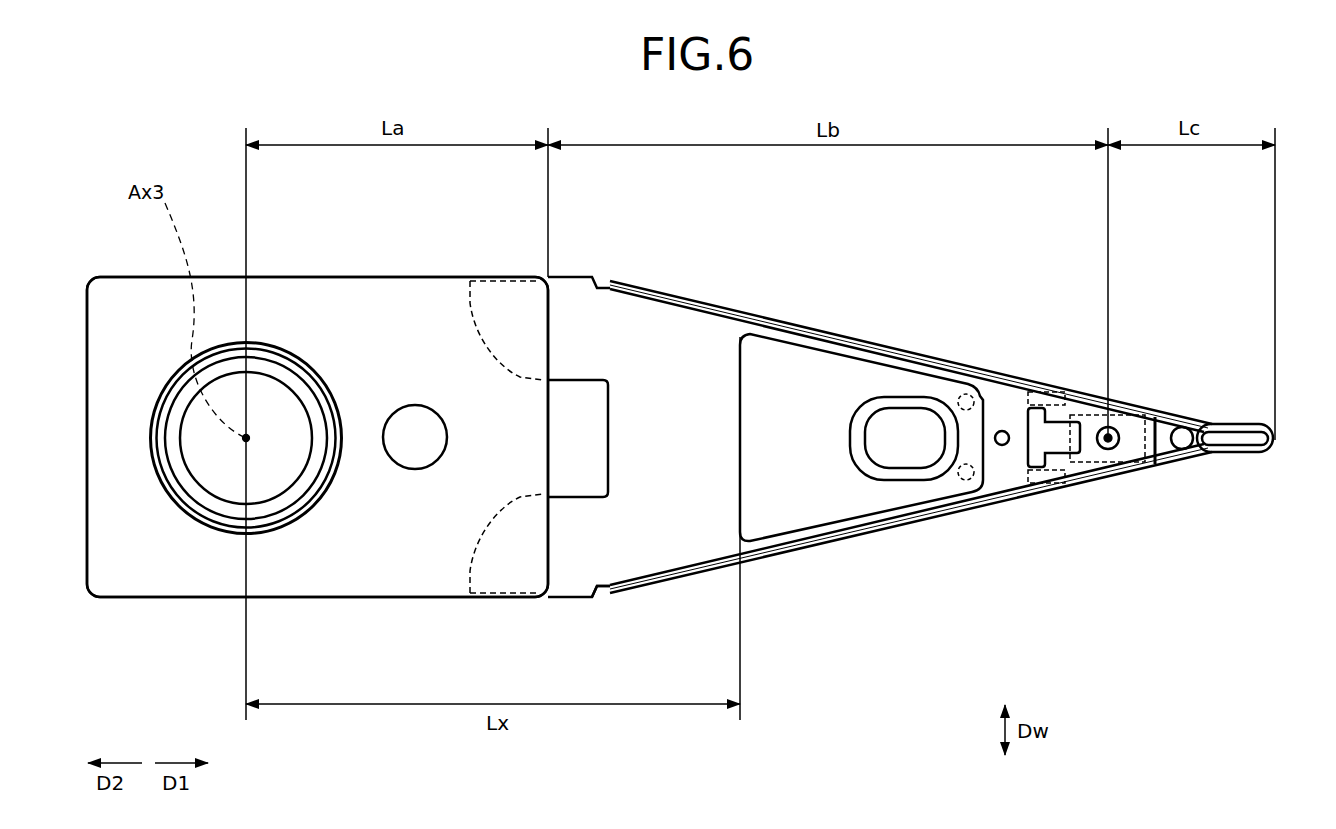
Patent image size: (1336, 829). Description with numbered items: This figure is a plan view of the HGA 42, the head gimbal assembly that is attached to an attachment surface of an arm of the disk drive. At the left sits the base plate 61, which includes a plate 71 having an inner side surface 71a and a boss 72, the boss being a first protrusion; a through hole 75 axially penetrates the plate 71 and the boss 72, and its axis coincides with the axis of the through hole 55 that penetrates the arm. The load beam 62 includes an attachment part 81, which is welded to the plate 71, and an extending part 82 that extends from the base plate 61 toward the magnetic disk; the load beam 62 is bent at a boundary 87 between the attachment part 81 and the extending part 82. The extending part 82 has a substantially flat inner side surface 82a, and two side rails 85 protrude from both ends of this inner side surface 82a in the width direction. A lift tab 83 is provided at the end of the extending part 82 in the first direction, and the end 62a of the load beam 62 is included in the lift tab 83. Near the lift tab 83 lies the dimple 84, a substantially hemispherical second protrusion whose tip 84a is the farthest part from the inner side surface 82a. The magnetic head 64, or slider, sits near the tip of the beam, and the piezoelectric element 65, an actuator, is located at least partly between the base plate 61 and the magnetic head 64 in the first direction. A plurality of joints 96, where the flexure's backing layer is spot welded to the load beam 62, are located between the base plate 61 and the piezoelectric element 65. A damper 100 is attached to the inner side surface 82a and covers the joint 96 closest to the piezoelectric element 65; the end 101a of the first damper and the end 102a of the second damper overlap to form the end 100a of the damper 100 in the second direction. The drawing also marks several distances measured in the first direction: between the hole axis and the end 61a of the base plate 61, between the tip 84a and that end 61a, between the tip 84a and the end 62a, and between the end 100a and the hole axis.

The HGA 42 is at (1174, 628).
The through hole 55 is at (260, 359).
The base plate 61 is at (135, 604).
The end of the base plate 61a is at (552, 330).
The load beam 62 is at (889, 334).
The end of the load beam 62a is at (1273, 447).
The magnetic head 64 is at (1145, 417).
The piezoelectric element 65 is at (1035, 392).
The plate 71 is at (317, 398).
The inner side surface 71a is at (393, 300).
The boss 72 is at (218, 505).
The through hole 75 is at (278, 400).
The attachment part 81 is at (510, 600).
The extending part 82 is at (911, 431).
The inner side surface 82a is at (684, 345).
The lift tab 83 is at (1243, 424).
The dimple 84 is at (1120, 463).
The tip of the dimple 84a is at (1108, 450).
The side rails 85 is at (843, 326).
The boundary 87 is at (600, 590).
The joints 96 is at (966, 394).
The damper 100 is at (789, 330).
The end of the damper 100a is at (737, 376).
The end of the first damper 101a is at (911, 551).
The end of the second damper 102a is at (710, 563).